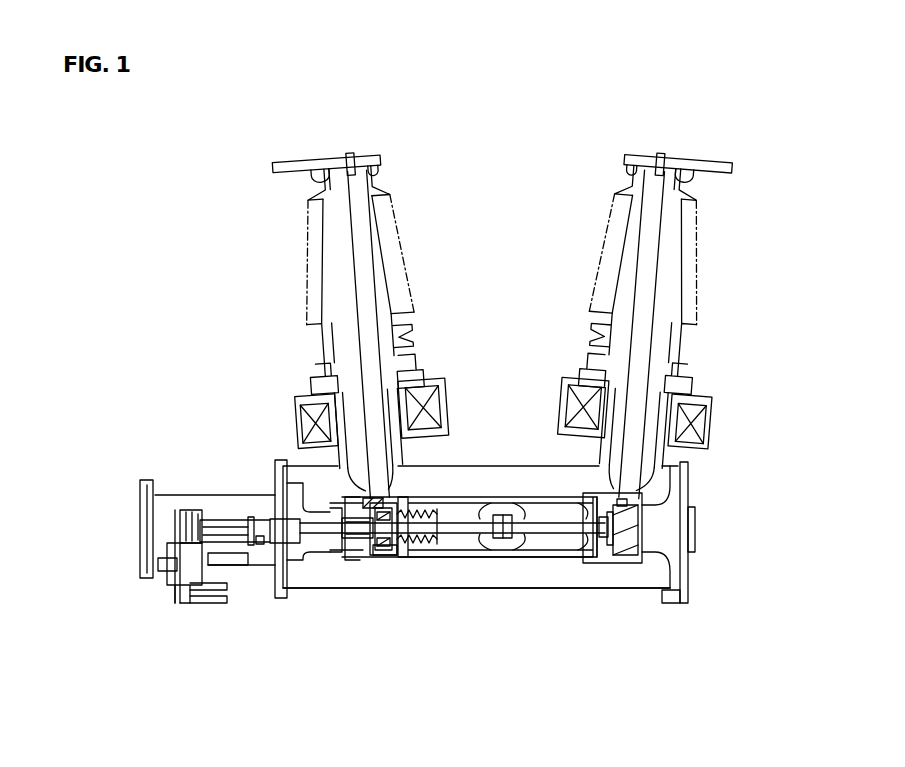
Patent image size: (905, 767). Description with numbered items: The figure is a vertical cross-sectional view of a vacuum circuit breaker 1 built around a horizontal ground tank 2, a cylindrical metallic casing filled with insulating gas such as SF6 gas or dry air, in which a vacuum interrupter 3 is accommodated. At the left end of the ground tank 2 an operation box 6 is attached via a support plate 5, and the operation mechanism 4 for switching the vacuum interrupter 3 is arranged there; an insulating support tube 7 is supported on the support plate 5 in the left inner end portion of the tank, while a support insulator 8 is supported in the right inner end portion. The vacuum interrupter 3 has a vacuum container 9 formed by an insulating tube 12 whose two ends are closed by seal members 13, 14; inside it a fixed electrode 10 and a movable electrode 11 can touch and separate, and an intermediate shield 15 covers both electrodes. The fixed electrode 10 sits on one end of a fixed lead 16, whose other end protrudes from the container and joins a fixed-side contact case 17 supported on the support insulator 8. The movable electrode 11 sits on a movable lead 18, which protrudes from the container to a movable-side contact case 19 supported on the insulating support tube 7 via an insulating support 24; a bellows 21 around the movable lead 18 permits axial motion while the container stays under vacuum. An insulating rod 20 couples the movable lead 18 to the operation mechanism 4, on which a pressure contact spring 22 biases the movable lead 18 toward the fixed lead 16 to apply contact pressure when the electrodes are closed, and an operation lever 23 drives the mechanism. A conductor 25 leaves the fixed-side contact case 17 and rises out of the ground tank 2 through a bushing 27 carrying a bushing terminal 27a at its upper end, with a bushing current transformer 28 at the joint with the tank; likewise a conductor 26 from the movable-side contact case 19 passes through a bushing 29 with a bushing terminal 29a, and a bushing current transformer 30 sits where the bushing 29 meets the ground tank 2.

The vacuum circuit breaker 1 is at (720, 600).
The ground tank 2 is at (314, 590).
The vacuum interrupter 3 is at (575, 562).
The operation mechanism 4 is at (208, 503).
The support plate 5 is at (270, 570).
The operation box 6 is at (231, 494).
The insulating support tube 7 is at (327, 548).
The support insulator 8 is at (672, 508).
The vacuum container 9 is at (456, 566).
The fixed electrode 10 is at (506, 541).
The movable electrode 11 is at (487, 552).
The insulating tube 12 is at (557, 497).
The seal member 13 is at (597, 490).
The seal member 14 is at (392, 500).
The intermediate shield 15 is at (520, 503).
The fixed lead 16 is at (612, 556).
The fixed-side contact case 17 is at (636, 565).
The movable lead 18 is at (413, 558).
The movable-side contact case 19 is at (386, 558).
The insulating rod 20 is at (315, 535).
The bellows 21 is at (430, 507).
The pressure contact spring 22 is at (247, 520).
The operation lever 23 is at (203, 603).
The insulating support 24 is at (353, 560).
The conductor 25 is at (637, 403).
The conductor 26 is at (358, 330).
The bushing 27 is at (676, 293).
The bushing terminal 27a is at (693, 155).
The bushing current transformer 28 is at (711, 418).
The bushing 29 is at (321, 302).
The bushing terminal 29a is at (293, 162).
The bushing current transformer 30 is at (298, 400).